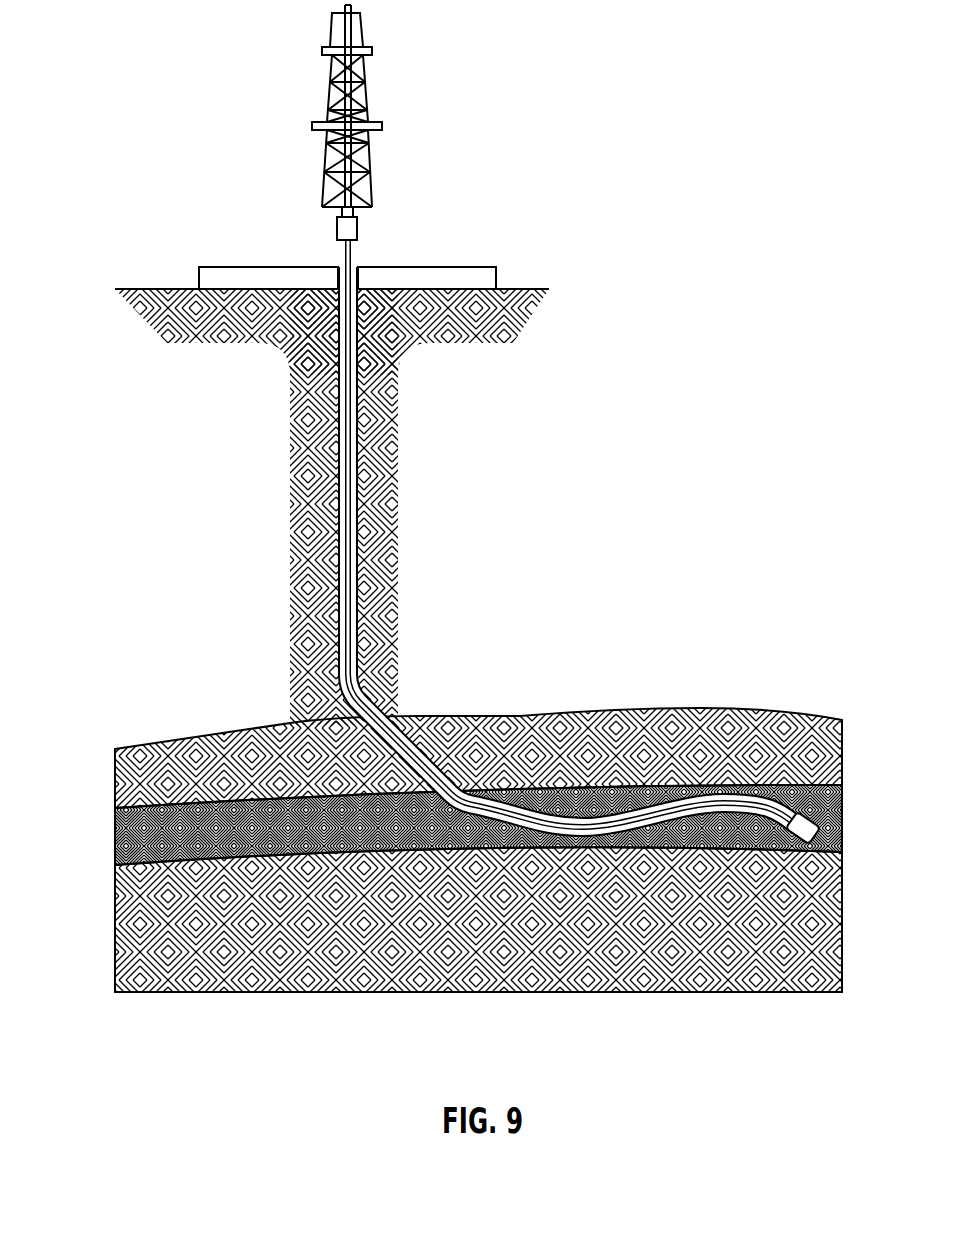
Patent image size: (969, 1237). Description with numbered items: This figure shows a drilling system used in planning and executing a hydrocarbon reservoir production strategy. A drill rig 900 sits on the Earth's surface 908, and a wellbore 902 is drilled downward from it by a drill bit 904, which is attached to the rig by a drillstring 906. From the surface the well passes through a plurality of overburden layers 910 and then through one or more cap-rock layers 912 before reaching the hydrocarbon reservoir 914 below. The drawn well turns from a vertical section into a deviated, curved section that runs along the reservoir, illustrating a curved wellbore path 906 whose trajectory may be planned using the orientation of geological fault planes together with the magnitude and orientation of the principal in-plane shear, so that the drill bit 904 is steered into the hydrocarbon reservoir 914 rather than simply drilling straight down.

The drill rig 900 is at (372, 157).
The wellbore 902 is at (333, 438).
The drill bit 904 is at (807, 817).
The drillstring 906 is at (352, 252).
The Earth's surface 908 is at (535, 289).
The overburden layers 910 is at (395, 427).
The cap-rock layers 912 is at (122, 773).
The hydrocarbon reservoir 914 is at (122, 852).